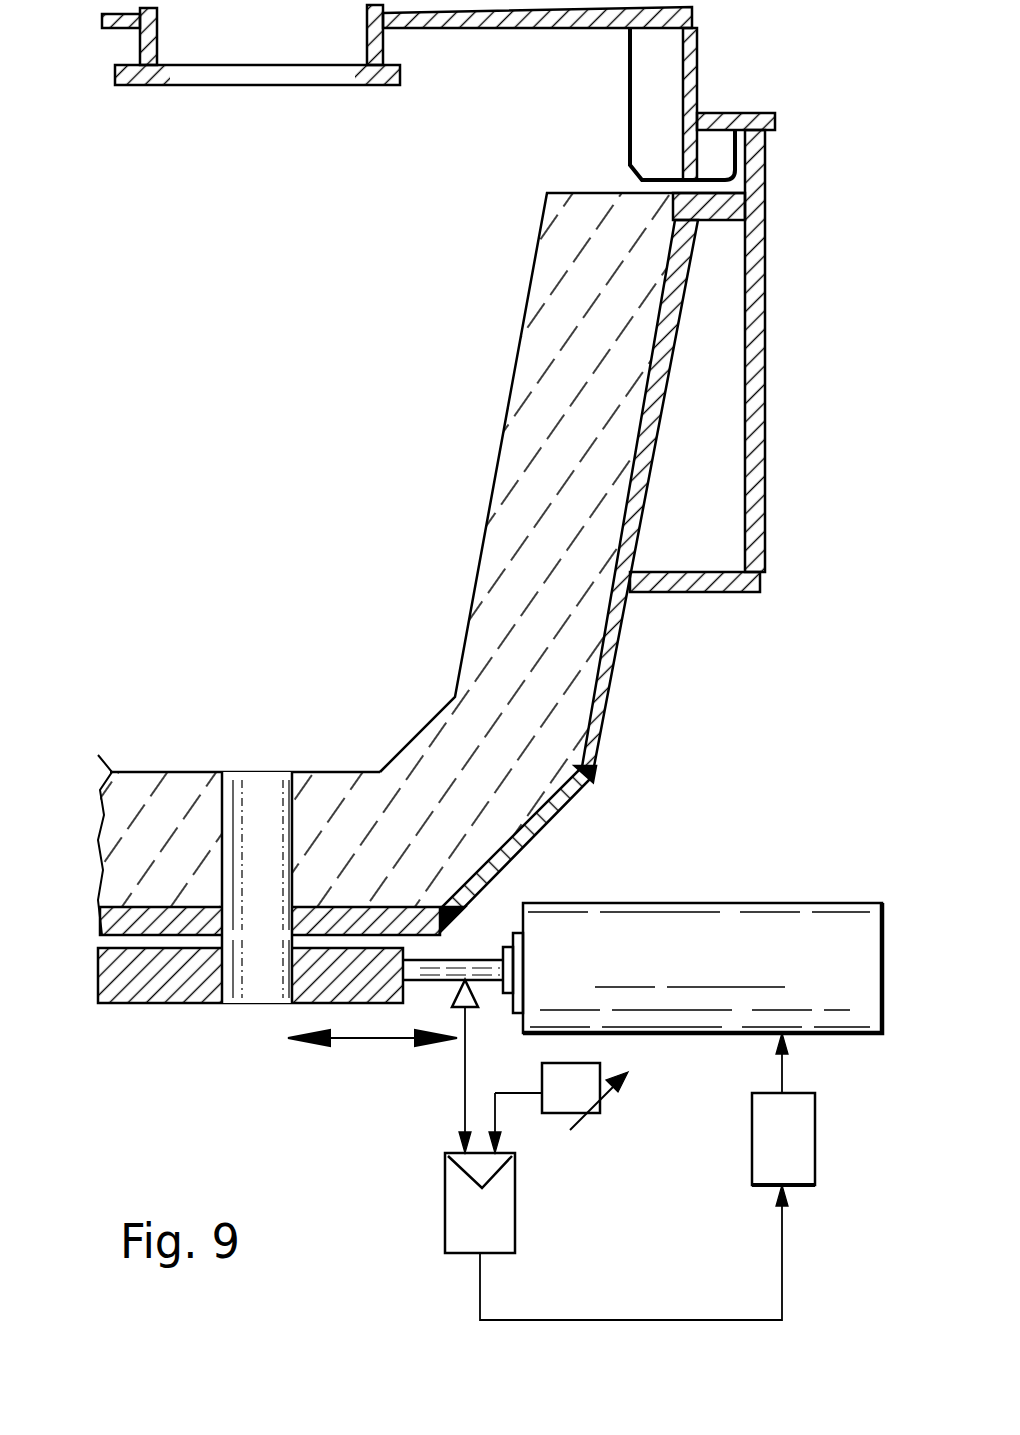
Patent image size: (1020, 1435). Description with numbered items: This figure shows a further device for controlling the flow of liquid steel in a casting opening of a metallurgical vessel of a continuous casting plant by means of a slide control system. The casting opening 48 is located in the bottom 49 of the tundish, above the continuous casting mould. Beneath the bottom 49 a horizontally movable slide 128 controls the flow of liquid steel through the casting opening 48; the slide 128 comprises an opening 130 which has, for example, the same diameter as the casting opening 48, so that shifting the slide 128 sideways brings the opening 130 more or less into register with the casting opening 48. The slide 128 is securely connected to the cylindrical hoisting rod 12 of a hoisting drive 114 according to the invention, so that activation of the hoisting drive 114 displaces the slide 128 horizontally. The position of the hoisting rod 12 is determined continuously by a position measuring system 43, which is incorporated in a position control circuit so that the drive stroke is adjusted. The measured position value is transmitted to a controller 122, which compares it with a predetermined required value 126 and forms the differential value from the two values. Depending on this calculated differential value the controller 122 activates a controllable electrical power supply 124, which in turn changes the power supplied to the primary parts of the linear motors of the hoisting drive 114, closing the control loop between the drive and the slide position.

The hoisting rod 12 is at (478, 960).
The position measuring system 43 is at (479, 1007).
The casting opening 48 is at (240, 785).
The bottom of the tundish 49 is at (118, 838).
The hoisting drive 114 is at (752, 918).
The controller 122 is at (455, 1203).
The controllable electrical power supply 124 is at (765, 1135).
The required value 126 is at (565, 1095).
The slide 128 is at (135, 985).
The opening of the slide 130 is at (250, 990).